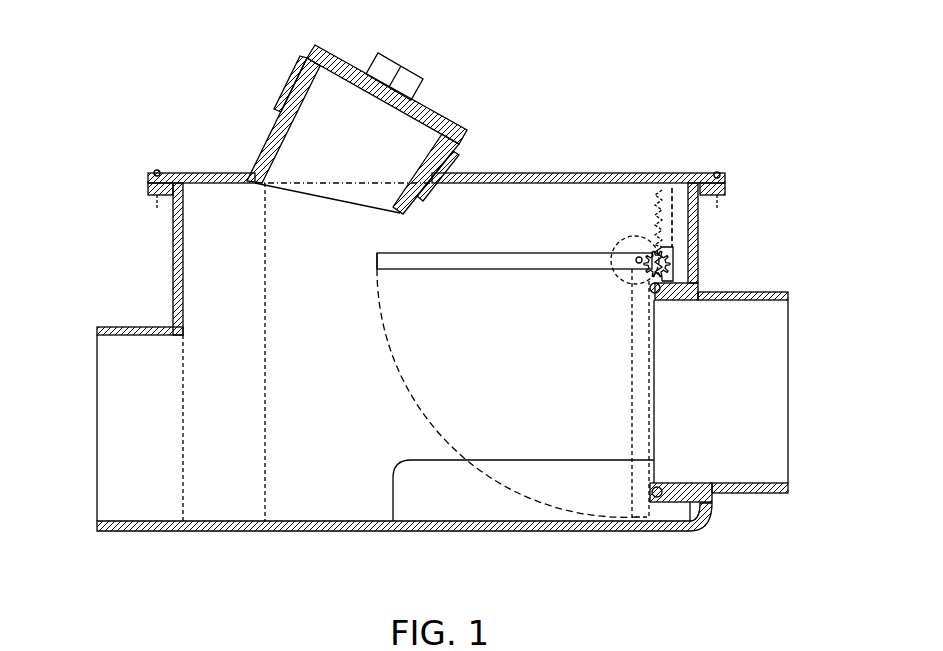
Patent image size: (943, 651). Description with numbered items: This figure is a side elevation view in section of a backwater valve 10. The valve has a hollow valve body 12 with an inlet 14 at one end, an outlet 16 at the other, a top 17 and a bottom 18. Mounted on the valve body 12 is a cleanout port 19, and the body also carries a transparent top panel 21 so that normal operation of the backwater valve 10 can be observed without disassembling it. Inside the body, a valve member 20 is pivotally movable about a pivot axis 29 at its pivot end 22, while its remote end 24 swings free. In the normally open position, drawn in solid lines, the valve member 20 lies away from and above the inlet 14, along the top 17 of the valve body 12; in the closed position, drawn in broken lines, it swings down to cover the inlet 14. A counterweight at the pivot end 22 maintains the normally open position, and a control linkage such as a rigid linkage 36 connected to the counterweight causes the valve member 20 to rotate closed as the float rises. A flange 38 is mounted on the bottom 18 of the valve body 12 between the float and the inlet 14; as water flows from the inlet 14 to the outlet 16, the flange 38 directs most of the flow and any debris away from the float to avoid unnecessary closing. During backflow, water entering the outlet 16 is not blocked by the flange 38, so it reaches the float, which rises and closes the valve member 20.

The backwater valve 10 is at (163, 78).
The valve body 12 is at (182, 270).
The inlet 14 is at (792, 298).
The outlet 16 is at (98, 330).
The top 17 is at (238, 180).
The bottom 18 is at (334, 521).
The cleanout port 19 is at (296, 100).
The valve member 20 is at (507, 270).
The transparent top panel 21 is at (612, 174).
The pivot end 22 is at (633, 253).
The remote end 24 is at (377, 257).
The pivot axis 29 is at (652, 250).
The rigid linkage 36 is at (672, 260).
The flange 38 is at (430, 502).